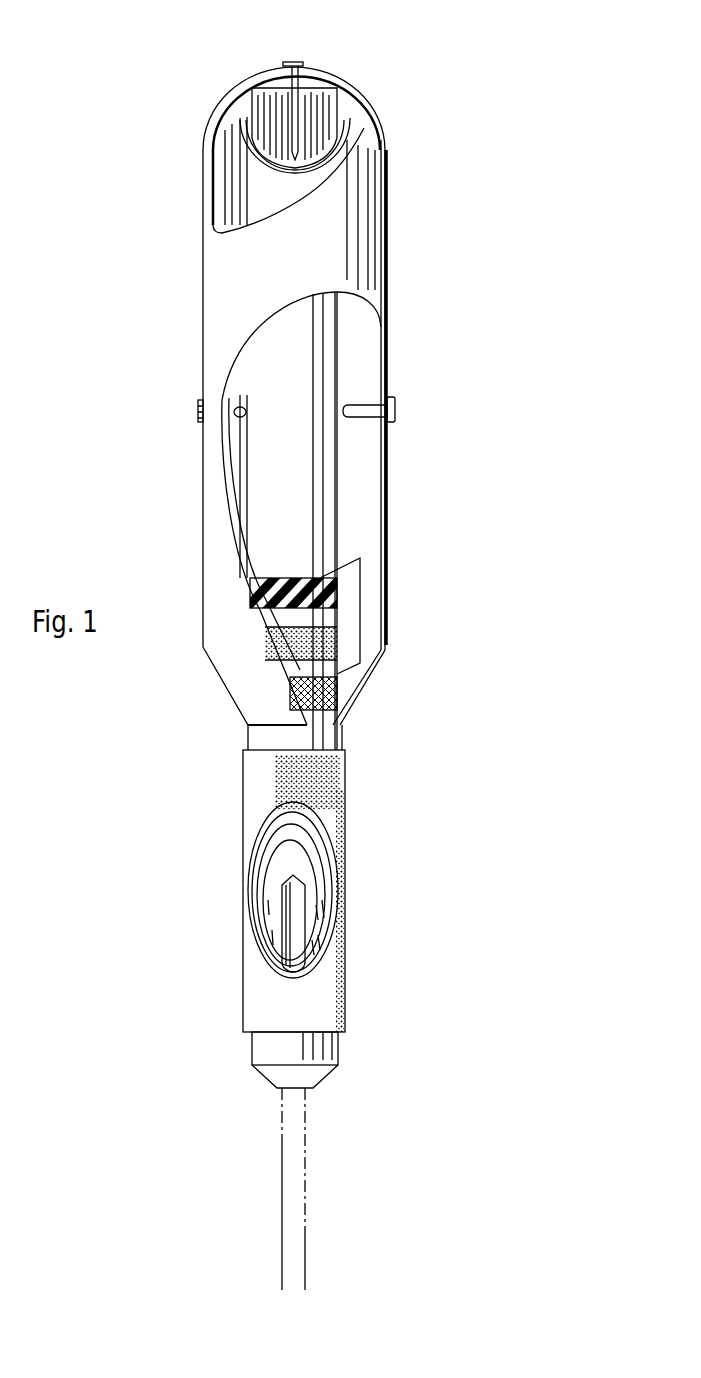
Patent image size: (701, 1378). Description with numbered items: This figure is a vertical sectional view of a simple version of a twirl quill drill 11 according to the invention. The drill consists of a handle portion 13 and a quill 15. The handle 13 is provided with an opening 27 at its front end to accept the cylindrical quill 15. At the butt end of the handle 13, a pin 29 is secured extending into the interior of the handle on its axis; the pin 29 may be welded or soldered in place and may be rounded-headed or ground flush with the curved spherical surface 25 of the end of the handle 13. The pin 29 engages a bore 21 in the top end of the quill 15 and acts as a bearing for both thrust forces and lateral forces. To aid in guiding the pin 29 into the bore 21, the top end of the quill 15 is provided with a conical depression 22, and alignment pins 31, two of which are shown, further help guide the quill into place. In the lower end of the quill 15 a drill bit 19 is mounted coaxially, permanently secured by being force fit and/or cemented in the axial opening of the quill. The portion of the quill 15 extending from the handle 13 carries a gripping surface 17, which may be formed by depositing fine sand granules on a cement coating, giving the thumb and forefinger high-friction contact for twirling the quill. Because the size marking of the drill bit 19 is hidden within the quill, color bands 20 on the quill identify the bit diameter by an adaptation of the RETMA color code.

The twirl quill drill 11 is at (400, 256).
The handle portion 13 is at (387, 177).
The quill 15 is at (340, 738).
The gripping surface 17 is at (345, 805).
The drill bit 19 is at (305, 1113).
The color bands 20 is at (323, 623).
The bore 21 is at (300, 153).
The conical depression 22 is at (272, 93).
The curved spherical surface 25 is at (228, 90).
The opening 27 is at (270, 725).
The pin 29 is at (298, 62).
The alignment pins 31 is at (198, 403).